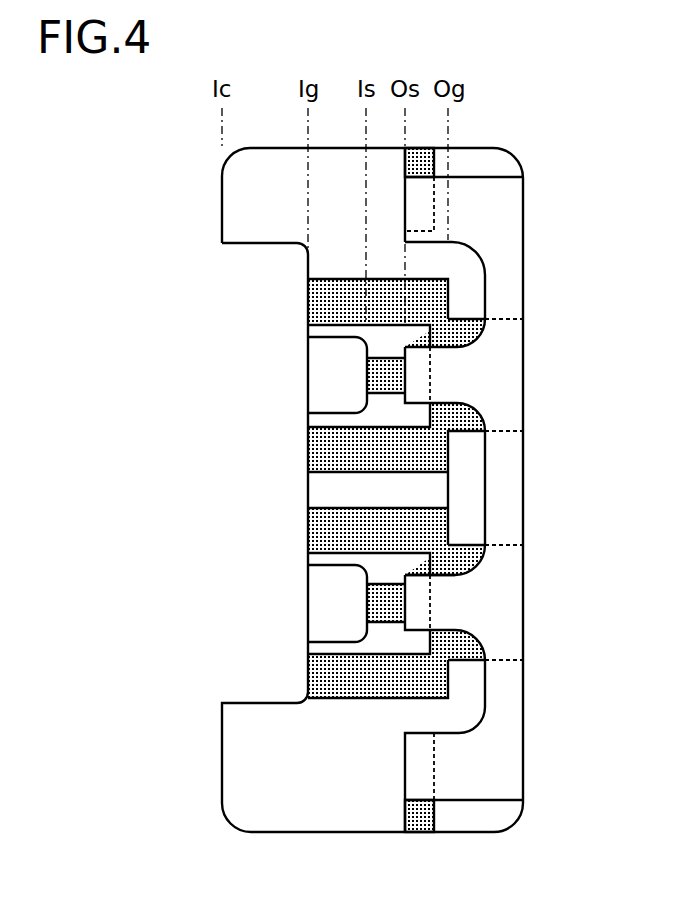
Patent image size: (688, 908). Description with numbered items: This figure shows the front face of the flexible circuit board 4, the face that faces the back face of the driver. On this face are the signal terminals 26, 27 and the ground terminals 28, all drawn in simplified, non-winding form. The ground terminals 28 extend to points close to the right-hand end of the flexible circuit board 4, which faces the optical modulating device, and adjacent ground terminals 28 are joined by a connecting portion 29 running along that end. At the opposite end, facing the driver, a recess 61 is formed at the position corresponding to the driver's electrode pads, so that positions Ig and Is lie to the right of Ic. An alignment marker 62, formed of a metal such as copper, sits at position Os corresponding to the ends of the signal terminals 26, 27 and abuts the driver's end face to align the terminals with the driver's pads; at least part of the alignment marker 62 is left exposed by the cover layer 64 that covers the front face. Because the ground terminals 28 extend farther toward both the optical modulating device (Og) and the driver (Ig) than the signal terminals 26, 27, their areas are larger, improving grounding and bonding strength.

The flexible circuit board 4 is at (512, 153).
The signal terminal 26 is at (377, 606).
The signal terminal 27 is at (377, 378).
The ground terminals 28 is at (318, 303).
The connecting portion 29 is at (477, 317).
The recess 61 is at (247, 244).
The alignment marker 62 is at (421, 155).
The cover layer 64 is at (508, 198).